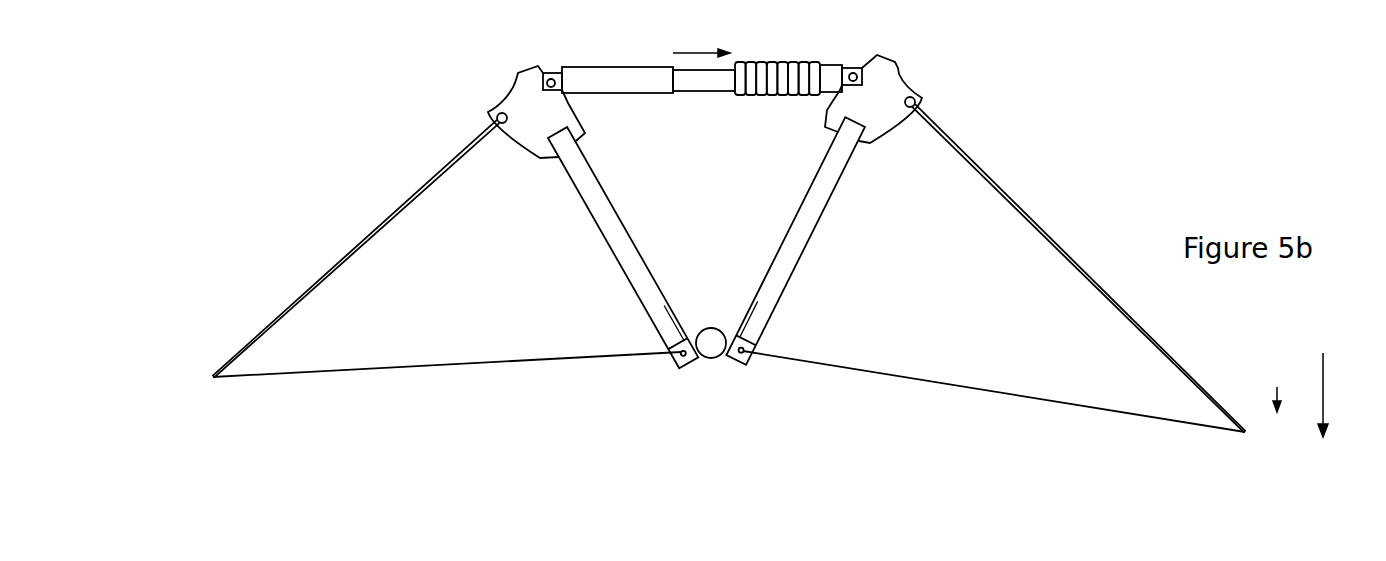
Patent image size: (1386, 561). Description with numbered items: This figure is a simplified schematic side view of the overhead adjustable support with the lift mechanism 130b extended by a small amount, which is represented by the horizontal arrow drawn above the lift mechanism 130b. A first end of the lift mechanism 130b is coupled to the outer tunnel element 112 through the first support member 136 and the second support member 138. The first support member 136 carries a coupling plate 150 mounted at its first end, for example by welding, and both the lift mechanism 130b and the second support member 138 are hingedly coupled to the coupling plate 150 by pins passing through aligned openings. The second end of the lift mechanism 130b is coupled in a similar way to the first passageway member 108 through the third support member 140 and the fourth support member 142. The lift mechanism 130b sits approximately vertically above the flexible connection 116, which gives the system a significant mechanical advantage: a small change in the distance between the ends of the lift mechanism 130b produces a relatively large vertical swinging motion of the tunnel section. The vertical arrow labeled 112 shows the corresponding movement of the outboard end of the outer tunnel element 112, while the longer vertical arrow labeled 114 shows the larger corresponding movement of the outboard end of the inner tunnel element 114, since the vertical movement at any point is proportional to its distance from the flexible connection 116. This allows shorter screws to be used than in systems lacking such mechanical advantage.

The lift mechanism 130b is at (597, 68).
The coupling plate 150 is at (893, 60).
The third support member 140 is at (573, 210).
The fourth support member 142 is at (414, 196).
The second support member 138 is at (961, 151).
The first support member 136 is at (840, 178).
The first passageway member 108 is at (475, 363).
The flexible connection 116 is at (698, 357).
The outer tunnel element 112 is at (822, 365).
The inner tunnel element 114 is at (1328, 384).